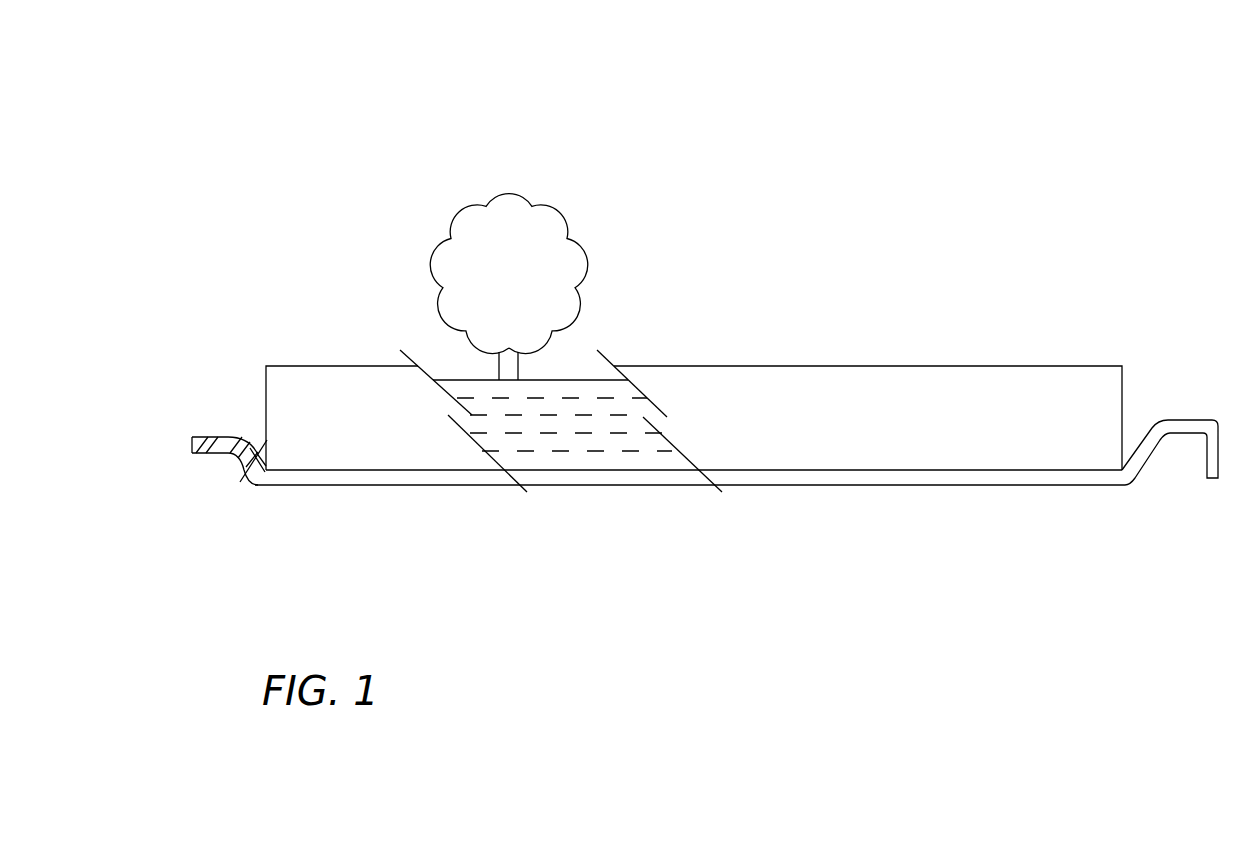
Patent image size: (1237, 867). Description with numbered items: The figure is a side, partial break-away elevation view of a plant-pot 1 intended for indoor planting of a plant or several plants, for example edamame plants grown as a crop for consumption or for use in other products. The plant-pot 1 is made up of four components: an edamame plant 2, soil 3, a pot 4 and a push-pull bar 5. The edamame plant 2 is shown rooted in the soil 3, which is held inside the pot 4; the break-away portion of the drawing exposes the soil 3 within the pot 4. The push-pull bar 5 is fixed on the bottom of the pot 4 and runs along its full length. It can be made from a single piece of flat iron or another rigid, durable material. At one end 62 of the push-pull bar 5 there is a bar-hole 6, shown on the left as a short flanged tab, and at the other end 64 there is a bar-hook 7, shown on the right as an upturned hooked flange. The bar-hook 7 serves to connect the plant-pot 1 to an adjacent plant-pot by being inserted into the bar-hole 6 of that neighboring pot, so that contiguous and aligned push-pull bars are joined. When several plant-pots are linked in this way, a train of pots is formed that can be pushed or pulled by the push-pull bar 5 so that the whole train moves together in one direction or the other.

The plant-pot 1 is at (792, 130).
The edamame plant 2 is at (582, 246).
The soil 3 is at (585, 452).
The pot 4 is at (728, 402).
The push-pull bar 5 is at (830, 487).
The bar-hole 6 is at (217, 465).
The bar-hook 7 is at (1180, 418).
The one end of push-pull bar 62 is at (291, 266).
The other end of push-pull bar 64 is at (1098, 266).